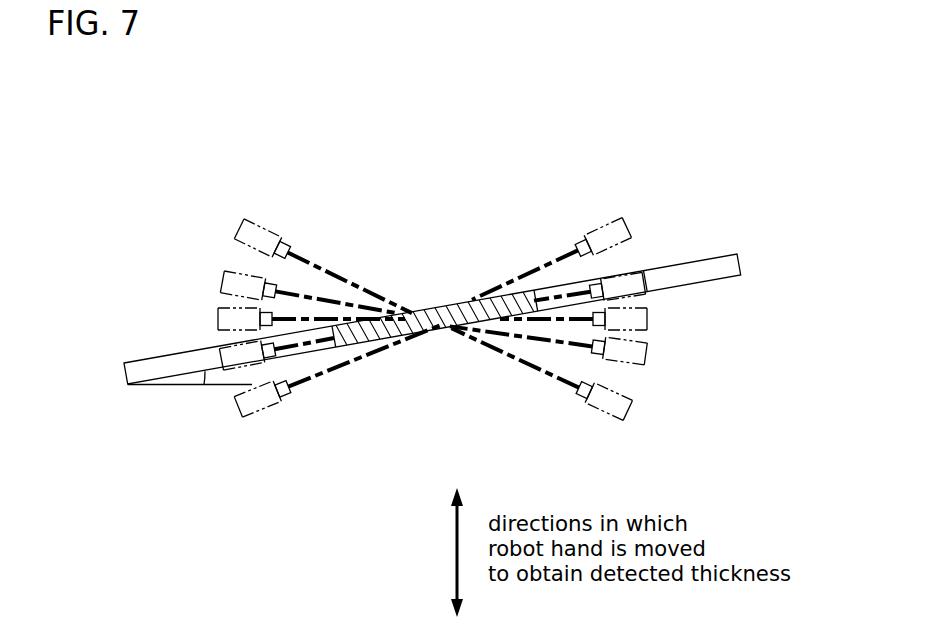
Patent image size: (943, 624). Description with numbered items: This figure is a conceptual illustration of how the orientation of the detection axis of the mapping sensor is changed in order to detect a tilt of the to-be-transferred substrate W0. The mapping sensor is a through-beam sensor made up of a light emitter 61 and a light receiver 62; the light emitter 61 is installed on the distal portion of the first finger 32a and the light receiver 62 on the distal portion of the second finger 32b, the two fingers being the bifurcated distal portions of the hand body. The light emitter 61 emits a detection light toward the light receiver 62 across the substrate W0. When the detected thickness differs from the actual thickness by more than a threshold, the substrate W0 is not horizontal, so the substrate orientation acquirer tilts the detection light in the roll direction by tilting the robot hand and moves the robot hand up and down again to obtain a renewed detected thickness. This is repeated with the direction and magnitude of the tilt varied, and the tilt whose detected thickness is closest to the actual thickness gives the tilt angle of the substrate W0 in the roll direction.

The substrate W0 is at (731, 267).
The first finger 32a is at (218, 313).
The second finger 32b is at (648, 317).
The light emitter 61 is at (285, 331).
The light receiver 62 is at (599, 329).